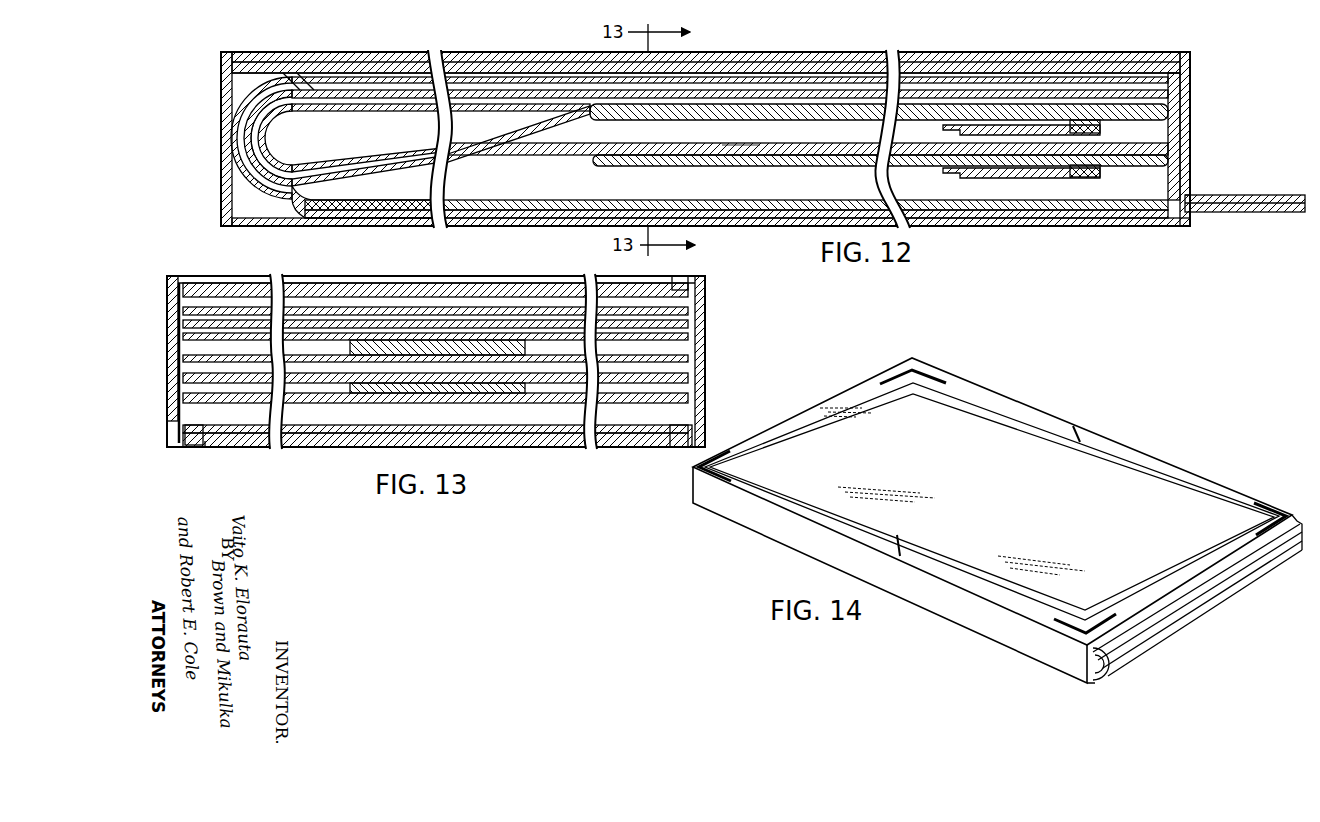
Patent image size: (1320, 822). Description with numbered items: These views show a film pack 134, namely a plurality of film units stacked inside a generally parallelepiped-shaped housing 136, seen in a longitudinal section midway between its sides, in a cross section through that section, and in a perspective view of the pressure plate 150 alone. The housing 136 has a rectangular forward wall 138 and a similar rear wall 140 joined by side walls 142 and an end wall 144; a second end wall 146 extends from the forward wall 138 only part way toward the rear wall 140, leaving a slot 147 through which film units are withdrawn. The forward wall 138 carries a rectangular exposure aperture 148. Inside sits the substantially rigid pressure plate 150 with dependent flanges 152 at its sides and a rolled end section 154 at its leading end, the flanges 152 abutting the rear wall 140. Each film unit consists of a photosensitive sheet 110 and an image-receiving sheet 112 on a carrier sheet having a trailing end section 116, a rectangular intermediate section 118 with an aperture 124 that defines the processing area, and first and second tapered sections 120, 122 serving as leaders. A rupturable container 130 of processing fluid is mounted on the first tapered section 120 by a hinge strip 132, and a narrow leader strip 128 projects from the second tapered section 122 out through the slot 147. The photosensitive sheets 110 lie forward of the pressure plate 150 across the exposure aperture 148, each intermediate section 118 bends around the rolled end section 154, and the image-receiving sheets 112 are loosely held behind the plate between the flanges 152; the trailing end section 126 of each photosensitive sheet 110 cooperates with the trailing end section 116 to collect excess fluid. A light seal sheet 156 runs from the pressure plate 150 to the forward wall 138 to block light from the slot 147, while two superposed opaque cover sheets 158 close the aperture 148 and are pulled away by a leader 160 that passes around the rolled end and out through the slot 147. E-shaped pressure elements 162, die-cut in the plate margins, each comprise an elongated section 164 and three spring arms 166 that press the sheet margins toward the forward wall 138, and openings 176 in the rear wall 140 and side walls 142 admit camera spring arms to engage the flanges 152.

In FIG. 12, the photosensitive sheet 110 is at (806, 100).
In FIG. 13, the photosensitive sheet 110 is at (488, 324).
In FIG. 12, the image-receiving sheet 112 is at (567, 207).
In FIG. 13, the image-receiving sheet 112 is at (345, 376).
In FIG. 12, the trailing end section 116 is at (276, 156).
In FIG. 12, the intermediate section 118 is at (293, 92).
In FIG. 13, the intermediate section 118 is at (688, 420).
In FIG. 12, the first tapered section 120 is at (520, 142).
In FIG. 12, the second tapered section 122 is at (790, 117).
In FIG. 13, the second tapered section 122 is at (523, 354).
In FIG. 12, the aperture 124 is at (722, 145).
In FIG. 13, the aperture 124 is at (203, 375).
In FIG. 12, the trailing end section 126 is at (1135, 93).
In FIG. 12, the leader strip 128 is at (860, 114).
In FIG. 12, the rupturable container 130 is at (1005, 127).
In FIG. 12, the hinge strip 132 is at (1085, 120).
In FIG. 12, the film pack 134 is at (997, 236).
In FIG. 12, the housing 136 is at (948, 228).
In FIG. 12, the forward wall 138 is at (297, 60).
In FIG. 13, the forward wall 138 is at (185, 280).
In FIG. 12, the rear wall 140 is at (750, 226).
In FIG. 13, the side walls 142 is at (165, 318).
In FIG. 12, the end wall 144 is at (221, 82).
In FIG. 12, the second end wall 146 is at (1190, 125).
In FIG. 12, the slot 147 is at (1192, 193).
In FIG. 12, the exposure aperture 148 is at (323, 61).
In FIG. 13, the exposure aperture 148 is at (203, 290).
In FIG. 12, the pressure plate 150 is at (372, 106).
In FIG. 13, the pressure plate 150 is at (674, 330).
In FIG. 14, the pressure plate 150 is at (1118, 430).
In FIG. 13, the flanges 152 is at (172, 405).
In FIG. 14, the flanges 152 is at (820, 547).
In FIG. 12, the rolled end section 154 is at (270, 124).
In FIG. 14, the rolled end section 154 is at (1213, 604).
In FIG. 12, the light seal sheet 156 is at (1186, 64).
In FIG. 12, the cover sheets 158 is at (853, 60).
In FIG. 13, the cover sheets 158 is at (392, 295).
In FIG. 12, the leader 160 is at (470, 214).
In FIG. 13, the leader 160 is at (372, 438).
In FIG. 14, the E-shaped pressure elements 162 is at (1073, 430).
In FIG. 14, the elongated section 164 is at (1162, 467).
In FIG. 14, the spring arms 166 is at (900, 375).
In FIG. 13, the openings 176 is at (196, 447).